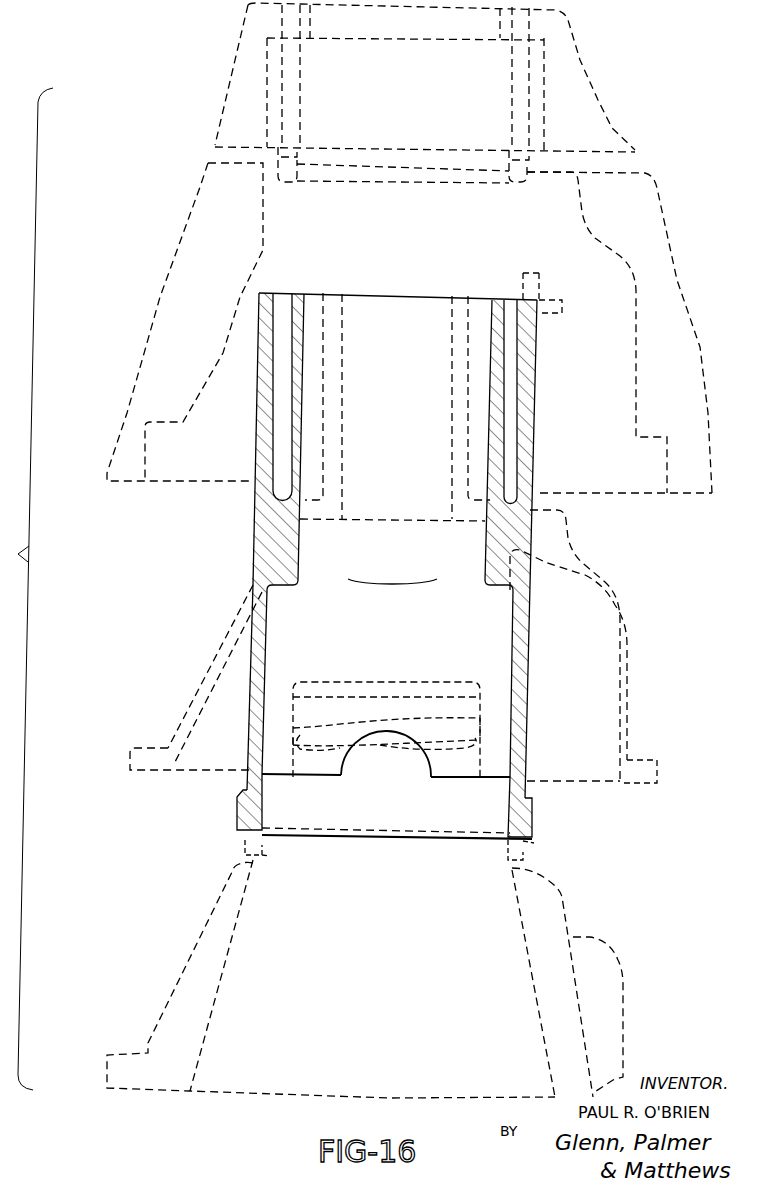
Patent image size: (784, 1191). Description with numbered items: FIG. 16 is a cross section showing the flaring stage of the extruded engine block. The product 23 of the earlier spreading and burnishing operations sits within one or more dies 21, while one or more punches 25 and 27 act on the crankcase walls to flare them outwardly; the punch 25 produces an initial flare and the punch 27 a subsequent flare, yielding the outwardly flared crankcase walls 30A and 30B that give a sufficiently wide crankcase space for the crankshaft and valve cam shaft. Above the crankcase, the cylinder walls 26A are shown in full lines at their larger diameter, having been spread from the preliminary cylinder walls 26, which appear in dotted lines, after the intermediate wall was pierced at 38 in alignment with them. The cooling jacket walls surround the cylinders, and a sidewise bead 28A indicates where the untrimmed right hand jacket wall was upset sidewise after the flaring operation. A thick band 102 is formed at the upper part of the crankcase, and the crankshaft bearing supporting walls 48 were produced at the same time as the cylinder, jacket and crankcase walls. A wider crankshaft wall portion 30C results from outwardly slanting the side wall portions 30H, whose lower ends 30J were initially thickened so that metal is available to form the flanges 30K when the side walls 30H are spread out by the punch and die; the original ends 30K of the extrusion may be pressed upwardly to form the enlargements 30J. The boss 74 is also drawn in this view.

The die 21 is at (217, 190).
The product 23 is at (190, 786).
The punch 25 is at (247, 852).
The preliminary cylinder walls 26 is at (457, 432).
The cylinder walls 26A is at (497, 330).
The punch 27 is at (213, 915).
The sidewise bead 28A is at (530, 295).
The outwardly flared crankcase wall 30A is at (223, 642).
The outwardly flared crankcase wall 30B is at (627, 672).
The wider crankshaft wall portion 30C is at (592, 623).
The side wall portions 30H is at (265, 672).
The thickened lower ends 30J is at (237, 807).
The flanges 30K is at (653, 773).
The piercing 38 is at (357, 518).
The crankshaft bearing supporting walls 48 is at (492, 663).
The boss 74 is at (398, 735).
The thick band 102 is at (297, 551).